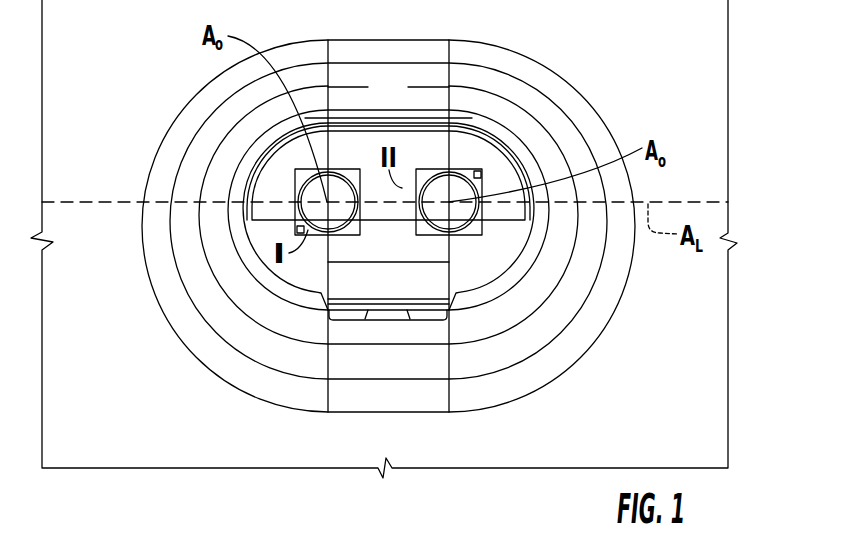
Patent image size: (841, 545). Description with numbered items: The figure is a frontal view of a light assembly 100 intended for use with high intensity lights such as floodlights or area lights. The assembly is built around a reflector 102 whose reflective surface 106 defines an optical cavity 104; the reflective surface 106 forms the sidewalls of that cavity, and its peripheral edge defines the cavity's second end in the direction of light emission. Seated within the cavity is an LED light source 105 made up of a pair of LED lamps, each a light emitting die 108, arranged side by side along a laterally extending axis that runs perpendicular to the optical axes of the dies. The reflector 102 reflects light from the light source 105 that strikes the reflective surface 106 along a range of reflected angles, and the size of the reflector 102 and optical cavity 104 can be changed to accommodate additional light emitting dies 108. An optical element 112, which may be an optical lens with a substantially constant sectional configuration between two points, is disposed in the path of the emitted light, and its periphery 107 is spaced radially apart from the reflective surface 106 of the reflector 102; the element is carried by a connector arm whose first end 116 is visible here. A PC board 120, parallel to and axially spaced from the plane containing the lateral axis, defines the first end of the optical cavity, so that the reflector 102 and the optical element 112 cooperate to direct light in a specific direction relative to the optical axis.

The light assembly 100 is at (633, 380).
The reflector 102 is at (180, 218).
The optical cavity 104 is at (247, 308).
The LED light source 105 is at (480, 240).
The reflective surface 106 is at (405, 97).
The periphery 107 is at (473, 173).
The light emitting die 108 is at (313, 192).
The optical element 112 is at (467, 130).
The first end 116 is at (427, 272).
The PC board 120 is at (415, 40).